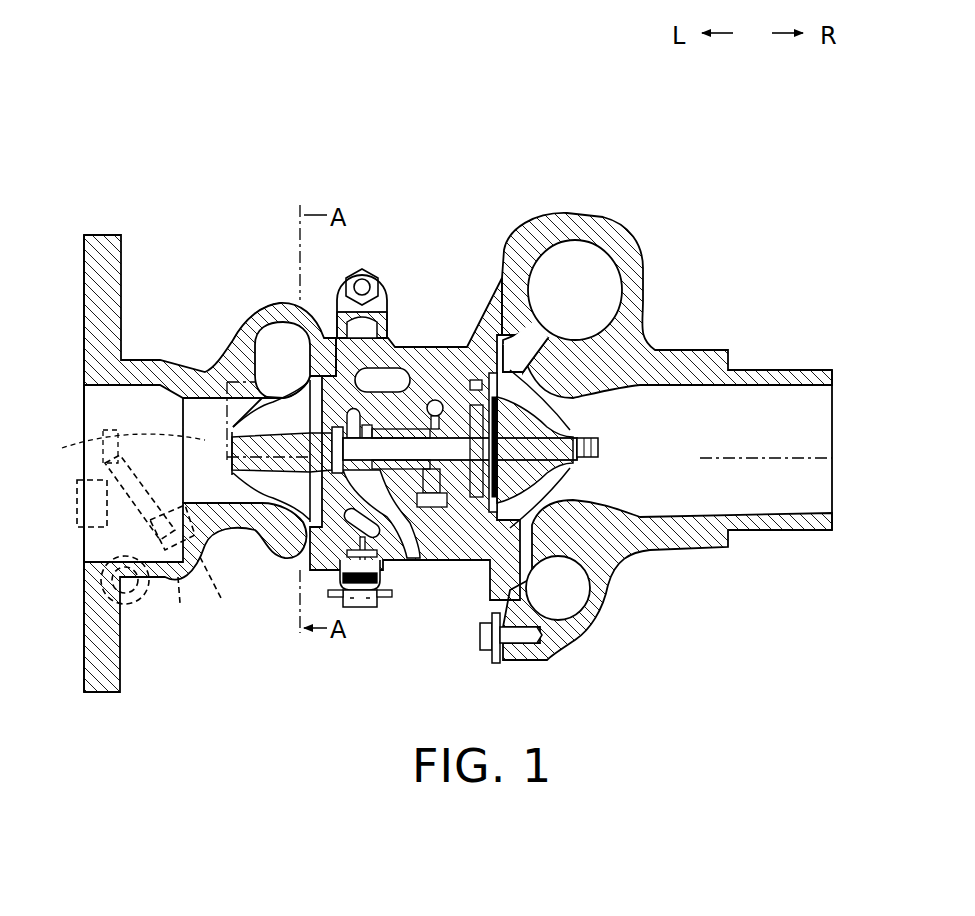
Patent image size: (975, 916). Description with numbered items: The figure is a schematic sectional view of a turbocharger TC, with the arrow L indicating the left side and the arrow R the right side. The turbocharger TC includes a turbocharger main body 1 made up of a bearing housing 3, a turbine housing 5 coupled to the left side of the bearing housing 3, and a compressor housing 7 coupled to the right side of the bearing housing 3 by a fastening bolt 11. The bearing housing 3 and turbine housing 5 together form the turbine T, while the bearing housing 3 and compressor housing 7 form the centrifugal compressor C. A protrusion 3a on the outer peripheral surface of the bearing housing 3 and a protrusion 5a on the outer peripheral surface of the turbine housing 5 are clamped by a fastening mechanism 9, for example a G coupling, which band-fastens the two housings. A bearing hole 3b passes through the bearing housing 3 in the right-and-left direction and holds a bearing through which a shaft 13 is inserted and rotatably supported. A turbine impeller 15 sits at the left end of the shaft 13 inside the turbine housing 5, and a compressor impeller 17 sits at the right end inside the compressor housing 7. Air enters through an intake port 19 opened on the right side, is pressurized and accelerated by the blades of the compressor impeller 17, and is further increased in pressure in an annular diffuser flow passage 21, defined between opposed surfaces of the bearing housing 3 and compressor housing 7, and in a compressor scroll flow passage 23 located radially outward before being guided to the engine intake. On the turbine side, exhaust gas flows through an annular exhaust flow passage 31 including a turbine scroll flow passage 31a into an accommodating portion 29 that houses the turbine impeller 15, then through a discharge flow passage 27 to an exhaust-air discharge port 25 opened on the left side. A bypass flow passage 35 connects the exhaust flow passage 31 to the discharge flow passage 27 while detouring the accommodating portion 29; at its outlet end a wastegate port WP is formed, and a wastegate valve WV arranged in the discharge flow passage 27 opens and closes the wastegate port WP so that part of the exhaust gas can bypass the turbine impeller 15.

The turbocharger TC is at (140, 58).
The turbocharger main body 1 is at (198, 110).
The turbine T is at (250, 188).
The centrifugal compressor C is at (522, 180).
The bearing housing 3 is at (432, 347).
The protrusion 3a is at (385, 335).
The bearing hole 3b is at (407, 478).
The turbine housing 5 is at (148, 360).
The protrusion 5a is at (348, 335).
The compressor housing 7 is at (578, 212).
The fastening mechanism 9 is at (362, 252).
The fastening bolt 11 is at (488, 665).
The shaft 13 is at (400, 467).
The turbine impeller 15 is at (255, 408).
The compressor impeller 17 is at (833, 458).
The intake port 19 is at (833, 486).
The diffuser flow passage 21 is at (483, 333).
The compressor scroll flow passage 23 is at (594, 264).
The exhaust-air discharge port 25 is at (115, 392).
The discharge flow passage 27 is at (84, 386).
The accommodating portion 29 is at (227, 397).
The exhaust flow passage 31 is at (266, 337).
The turbine scroll flow passage 31a is at (252, 320).
The bypass flow passage 35 is at (117, 445).
The wastegate port WP is at (95, 503).
The wastegate valve WV is at (93, 550).